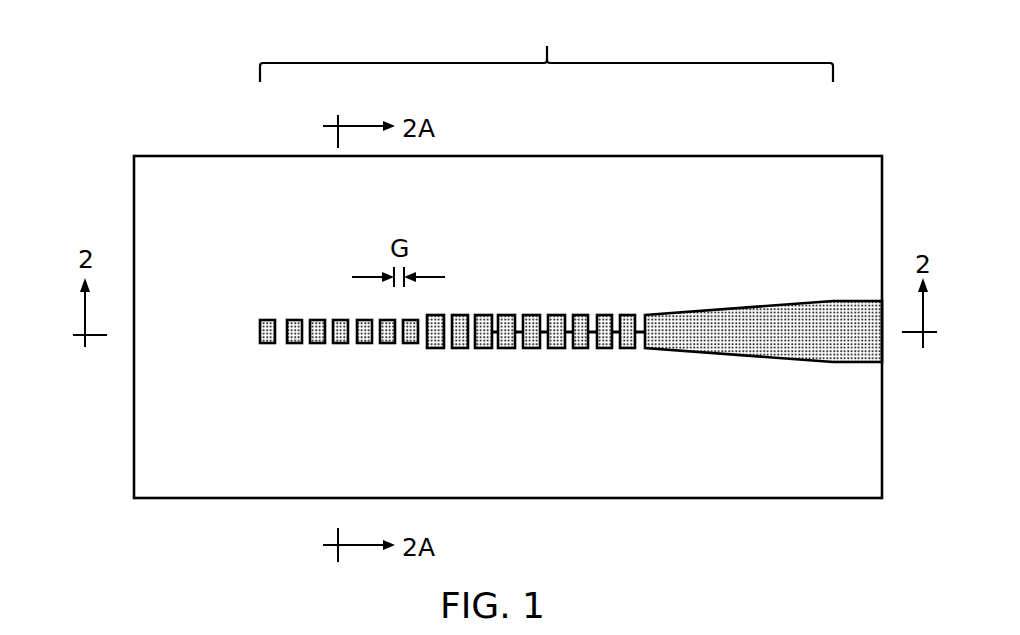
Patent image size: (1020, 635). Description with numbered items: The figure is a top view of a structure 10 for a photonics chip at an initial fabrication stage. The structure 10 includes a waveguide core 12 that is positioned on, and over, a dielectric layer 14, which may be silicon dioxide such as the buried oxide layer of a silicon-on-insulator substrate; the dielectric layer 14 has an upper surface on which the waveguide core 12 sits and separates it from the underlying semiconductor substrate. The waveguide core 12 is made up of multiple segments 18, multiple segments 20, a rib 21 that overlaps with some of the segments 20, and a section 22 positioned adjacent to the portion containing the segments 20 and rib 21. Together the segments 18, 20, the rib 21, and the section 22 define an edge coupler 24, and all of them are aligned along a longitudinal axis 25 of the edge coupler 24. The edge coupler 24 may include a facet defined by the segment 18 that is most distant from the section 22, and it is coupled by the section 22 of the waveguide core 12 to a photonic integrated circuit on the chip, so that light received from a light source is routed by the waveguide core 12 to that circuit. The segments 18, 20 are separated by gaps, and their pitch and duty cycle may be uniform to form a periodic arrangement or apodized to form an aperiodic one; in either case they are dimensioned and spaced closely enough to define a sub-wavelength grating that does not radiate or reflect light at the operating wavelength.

The structure 10 is at (124, 120).
The waveguide core 12 is at (752, 272).
The dielectric layer 14 is at (168, 427).
The segments 18 is at (343, 333).
The segments 20 is at (480, 340).
The rib 21 is at (568, 332).
The section 22 is at (713, 333).
The edge coupler 24 is at (546, 49).
The longitudinal axis 25 is at (521, 330).